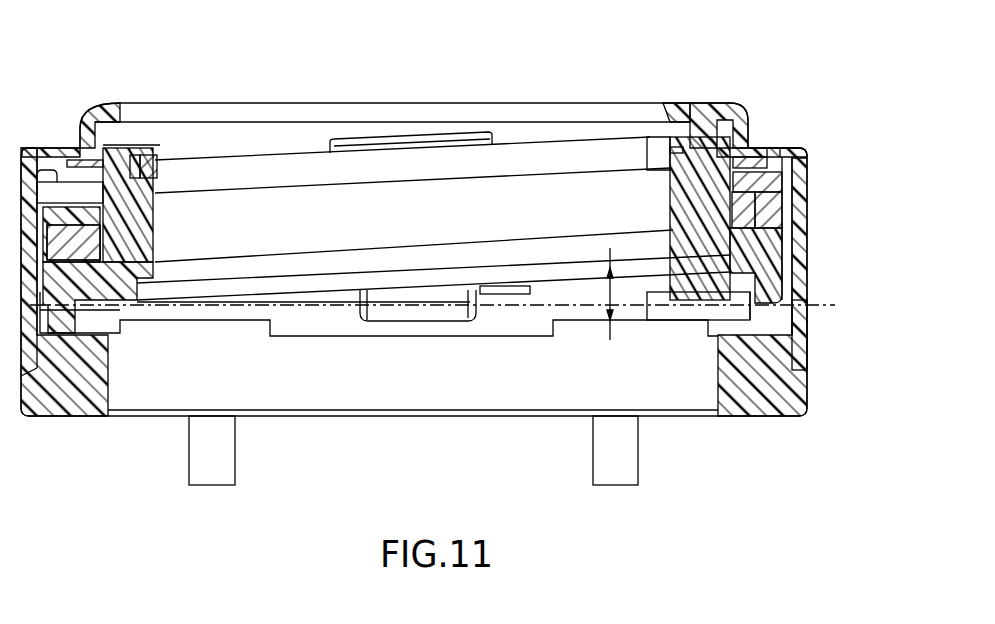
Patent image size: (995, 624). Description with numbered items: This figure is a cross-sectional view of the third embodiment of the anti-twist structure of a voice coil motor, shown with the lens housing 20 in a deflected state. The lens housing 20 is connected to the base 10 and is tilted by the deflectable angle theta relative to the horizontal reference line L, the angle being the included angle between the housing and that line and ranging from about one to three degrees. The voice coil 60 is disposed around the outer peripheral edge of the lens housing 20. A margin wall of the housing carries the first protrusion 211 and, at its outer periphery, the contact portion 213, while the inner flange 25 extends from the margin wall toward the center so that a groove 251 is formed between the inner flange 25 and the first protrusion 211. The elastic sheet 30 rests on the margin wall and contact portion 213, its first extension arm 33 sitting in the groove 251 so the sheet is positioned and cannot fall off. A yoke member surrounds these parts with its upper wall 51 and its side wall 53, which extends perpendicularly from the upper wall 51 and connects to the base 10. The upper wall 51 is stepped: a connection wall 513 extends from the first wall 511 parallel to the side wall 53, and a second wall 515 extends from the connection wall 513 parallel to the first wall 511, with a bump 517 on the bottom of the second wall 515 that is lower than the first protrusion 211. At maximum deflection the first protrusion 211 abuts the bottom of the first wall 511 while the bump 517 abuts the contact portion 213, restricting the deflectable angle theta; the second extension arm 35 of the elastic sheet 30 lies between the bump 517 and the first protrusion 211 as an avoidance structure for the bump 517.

The base 10 is at (778, 383).
The lens housing 20 is at (790, 265).
The inner flange 25 is at (173, 173).
The elastic sheet 30 is at (95, 158).
The first extension arm 33 is at (670, 153).
The second extension arm 35 is at (743, 198).
The upper wall 51 is at (472, 79).
The side wall 53 is at (800, 340).
The voice coil 60 is at (767, 222).
The first protrusion 211 is at (114, 160).
The contact portion 213 is at (767, 180).
The groove 251 is at (146, 150).
The first wall 511 is at (675, 105).
The connection wall 513 is at (740, 130).
The second wall 515 is at (775, 150).
The bump 517 is at (805, 100).
The horizontal reference line L is at (442, 302).
The deflectable angle theta is at (612, 309).